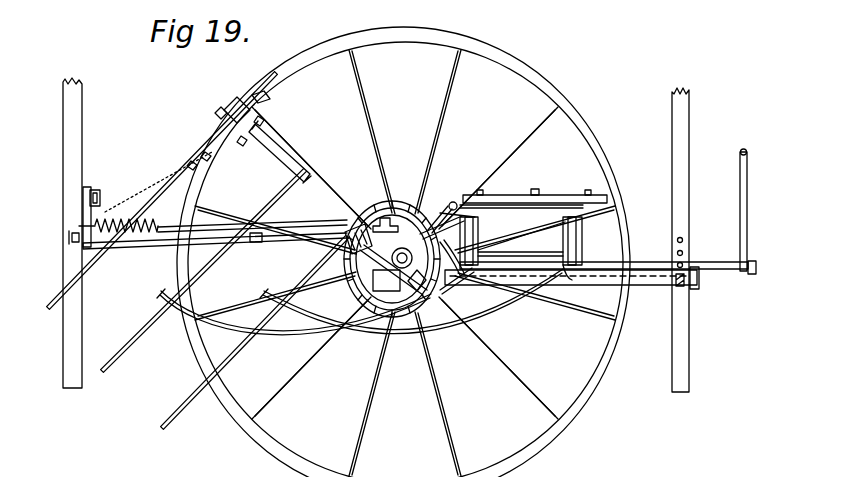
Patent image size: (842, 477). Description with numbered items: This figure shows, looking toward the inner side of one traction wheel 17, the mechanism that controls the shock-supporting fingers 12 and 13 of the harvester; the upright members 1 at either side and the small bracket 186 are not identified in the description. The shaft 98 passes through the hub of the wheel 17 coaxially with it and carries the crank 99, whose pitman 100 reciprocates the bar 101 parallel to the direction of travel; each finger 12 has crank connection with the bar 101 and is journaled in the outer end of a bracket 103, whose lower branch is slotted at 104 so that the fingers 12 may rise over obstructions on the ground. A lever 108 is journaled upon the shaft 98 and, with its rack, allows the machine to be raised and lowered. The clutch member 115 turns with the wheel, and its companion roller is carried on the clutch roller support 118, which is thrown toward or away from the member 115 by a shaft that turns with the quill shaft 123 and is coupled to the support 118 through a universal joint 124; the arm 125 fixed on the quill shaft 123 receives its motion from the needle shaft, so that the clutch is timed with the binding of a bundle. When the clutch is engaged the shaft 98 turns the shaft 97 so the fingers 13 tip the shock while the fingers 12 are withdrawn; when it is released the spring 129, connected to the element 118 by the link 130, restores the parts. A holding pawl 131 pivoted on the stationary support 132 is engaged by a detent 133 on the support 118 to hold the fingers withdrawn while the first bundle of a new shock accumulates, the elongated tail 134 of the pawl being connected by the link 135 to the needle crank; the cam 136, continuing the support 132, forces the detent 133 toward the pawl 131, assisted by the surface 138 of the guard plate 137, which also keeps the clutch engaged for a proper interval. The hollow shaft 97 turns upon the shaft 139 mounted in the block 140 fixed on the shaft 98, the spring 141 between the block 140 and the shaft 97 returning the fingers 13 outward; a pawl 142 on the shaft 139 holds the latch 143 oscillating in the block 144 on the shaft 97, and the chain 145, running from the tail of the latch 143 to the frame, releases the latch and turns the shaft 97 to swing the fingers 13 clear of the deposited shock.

The post 1 is at (82, 114).
The fingers 12 is at (168, 316).
The fingers 13 is at (48, 310).
The traction wheel 17 is at (596, 370).
The shaft 97 is at (287, 156).
The shaft 98 is at (403, 268).
The crank 99 is at (444, 314).
The pitman 100 is at (487, 197).
The bar 101 is at (560, 195).
The brackets 103 is at (565, 240).
The slot 104 is at (562, 273).
The lever 108 is at (497, 223).
The clutch member 115 is at (397, 200).
The clutch roller support 118 is at (450, 203).
The quill shaft 123 is at (158, 244).
The universal joint 124 is at (338, 198).
The arm 125 is at (82, 213).
The spring 129 is at (162, 250).
The link 130 is at (250, 243).
The holding pawl 131 is at (460, 282).
The stationary support 132 is at (648, 261).
The detent 133 is at (438, 190).
The elongated tail 134 is at (720, 272).
The link 135 is at (745, 212).
The cam 136 is at (420, 200).
The guard plate 137 is at (350, 218).
The surface 138 is at (471, 304).
The shaft 139 is at (234, 102).
The block 140 is at (286, 308).
The spring 141 is at (322, 298).
The holding pawl 142 is at (216, 112).
The latch 143 is at (275, 100).
The block 144 is at (250, 143).
The chain 145 is at (194, 170).
The bracket 186 is at (93, 192).